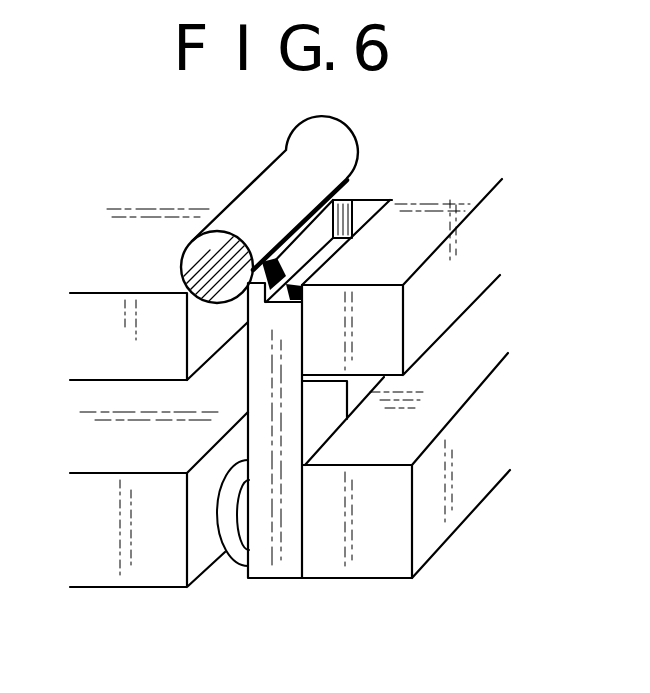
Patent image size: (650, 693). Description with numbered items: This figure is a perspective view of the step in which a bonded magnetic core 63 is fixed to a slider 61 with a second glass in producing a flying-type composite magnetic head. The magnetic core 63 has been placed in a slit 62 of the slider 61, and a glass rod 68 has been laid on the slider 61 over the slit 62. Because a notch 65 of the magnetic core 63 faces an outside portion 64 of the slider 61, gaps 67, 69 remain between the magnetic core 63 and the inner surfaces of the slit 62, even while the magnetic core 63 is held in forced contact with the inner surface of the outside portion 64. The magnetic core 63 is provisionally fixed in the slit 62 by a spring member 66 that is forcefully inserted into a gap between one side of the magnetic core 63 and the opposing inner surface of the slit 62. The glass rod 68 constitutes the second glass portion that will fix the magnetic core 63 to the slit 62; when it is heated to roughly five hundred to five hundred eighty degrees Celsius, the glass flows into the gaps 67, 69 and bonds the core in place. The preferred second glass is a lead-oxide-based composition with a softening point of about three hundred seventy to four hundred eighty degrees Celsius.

The slider 61 is at (88, 306).
The slit 62 is at (365, 208).
The magnetic core 63 is at (268, 566).
The outside portion 64 is at (363, 567).
The notch 65 is at (328, 248).
The spring member 66 is at (214, 530).
The gap 67 is at (198, 337).
The glass rod 68 is at (260, 181).
The gap 69 is at (372, 200).